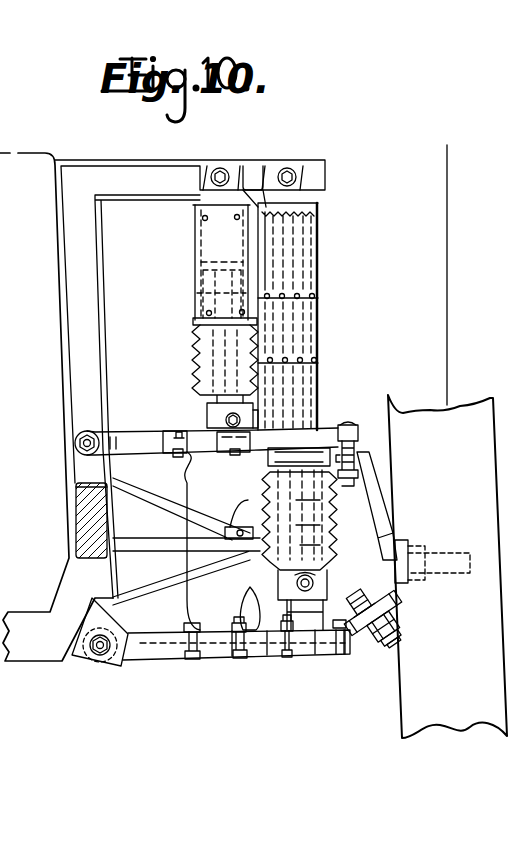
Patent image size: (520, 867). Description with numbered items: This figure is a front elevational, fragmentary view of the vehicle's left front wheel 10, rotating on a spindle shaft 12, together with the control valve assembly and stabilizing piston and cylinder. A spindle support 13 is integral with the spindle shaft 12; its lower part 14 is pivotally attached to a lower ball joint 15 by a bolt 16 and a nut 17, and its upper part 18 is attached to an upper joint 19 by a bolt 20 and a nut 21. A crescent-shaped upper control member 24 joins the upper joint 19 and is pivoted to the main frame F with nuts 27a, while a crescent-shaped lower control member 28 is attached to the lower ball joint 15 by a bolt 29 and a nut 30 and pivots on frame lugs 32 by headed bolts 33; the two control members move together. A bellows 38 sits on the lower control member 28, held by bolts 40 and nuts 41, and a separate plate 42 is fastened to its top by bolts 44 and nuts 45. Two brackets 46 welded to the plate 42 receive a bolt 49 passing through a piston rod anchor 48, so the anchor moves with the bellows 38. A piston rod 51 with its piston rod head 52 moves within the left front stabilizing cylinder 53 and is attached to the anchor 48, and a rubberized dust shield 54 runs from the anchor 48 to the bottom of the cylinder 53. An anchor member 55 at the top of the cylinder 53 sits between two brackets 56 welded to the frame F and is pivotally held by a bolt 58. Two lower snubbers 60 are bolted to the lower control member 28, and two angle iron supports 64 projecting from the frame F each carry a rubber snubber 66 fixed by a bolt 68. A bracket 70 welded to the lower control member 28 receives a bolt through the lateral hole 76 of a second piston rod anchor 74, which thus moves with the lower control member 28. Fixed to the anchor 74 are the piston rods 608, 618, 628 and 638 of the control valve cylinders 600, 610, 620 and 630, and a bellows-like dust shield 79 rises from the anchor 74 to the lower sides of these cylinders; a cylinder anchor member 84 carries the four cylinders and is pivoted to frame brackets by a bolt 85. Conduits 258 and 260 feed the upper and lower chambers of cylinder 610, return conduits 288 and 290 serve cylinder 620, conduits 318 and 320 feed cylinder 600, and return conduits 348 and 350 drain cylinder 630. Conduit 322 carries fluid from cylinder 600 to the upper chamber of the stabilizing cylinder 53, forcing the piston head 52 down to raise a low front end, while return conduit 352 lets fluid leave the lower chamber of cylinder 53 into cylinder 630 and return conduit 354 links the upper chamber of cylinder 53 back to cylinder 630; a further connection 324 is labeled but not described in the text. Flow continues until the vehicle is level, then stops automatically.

The main frame F is at (97, 160).
The front wheel 10 is at (484, 398).
The spindle shaft 12 is at (447, 552).
The spindle support 13 is at (395, 541).
The lower part 14 is at (392, 594).
The lower ball joint 15 is at (392, 616).
The bolt 16 is at (382, 646).
The nut 17 is at (360, 596).
The upper part 18 is at (380, 492).
The upper joint 19 is at (354, 452).
The bolt 20 is at (346, 425).
The nut 21 is at (360, 474).
The upper control member 24 is at (132, 433).
The nut 27a is at (74, 443).
The lower control member 28 is at (142, 655).
The bolt 29 is at (340, 622).
The nut 30 is at (332, 655).
The frame lug 32 is at (110, 611).
The headed bolt 33 is at (93, 650).
The bellows 38 is at (185, 483).
The bolt 40 is at (185, 662).
The nut 41 is at (188, 628).
The plate 42 is at (170, 444).
The bolt 44 is at (175, 455).
The nut 45 is at (207, 437).
The bracket 46 is at (240, 405).
The piston rod anchor 48 is at (215, 413).
The bolt 49 is at (226, 414).
The piston rod 51 is at (200, 297).
The piston rod head 52 is at (200, 270).
The left front stabilizing cylinder 53 is at (195, 233).
The dust shield 54 is at (197, 346).
The anchor member 55 is at (203, 200).
The bracket 56 is at (205, 172).
The bolt 58 is at (220, 166).
The lower snubber 60 is at (240, 600).
The angle iron support 64 is at (160, 508).
The rubber snubber 66 is at (240, 505).
The bolt 68 is at (232, 525).
The bracket 70 is at (325, 592).
The piston rod anchor 74 is at (283, 590).
The lateral hole 76 is at (278, 575).
The dust shield 79 is at (332, 545).
The cylinder anchor member 84 is at (322, 178).
The bolt 85 is at (288, 166).
The conduit 258 is at (300, 300).
The conduit 260 is at (303, 358).
The return conduit 288 is at (285, 293).
The return conduit 290 is at (287, 357).
The conduit 318 is at (316, 298).
The conduit 320 is at (316, 360).
The conduit 322 is at (235, 219).
The port 324 is at (242, 309).
The return conduit 348 is at (270, 293).
The return conduit 350 is at (272, 357).
The return conduit 352 is at (206, 313).
The return conduit 354 is at (202, 218).
The control valve cylinder 600 is at (322, 212).
The piston rod 608 is at (326, 522).
The control valve cylinder 610 is at (322, 228).
The piston rod 618 is at (326, 508).
The control valve cylinder 620 is at (322, 246).
The piston rod 628 is at (265, 492).
The control valve cylinder 630 is at (248, 242).
The piston rod 638 is at (270, 470).